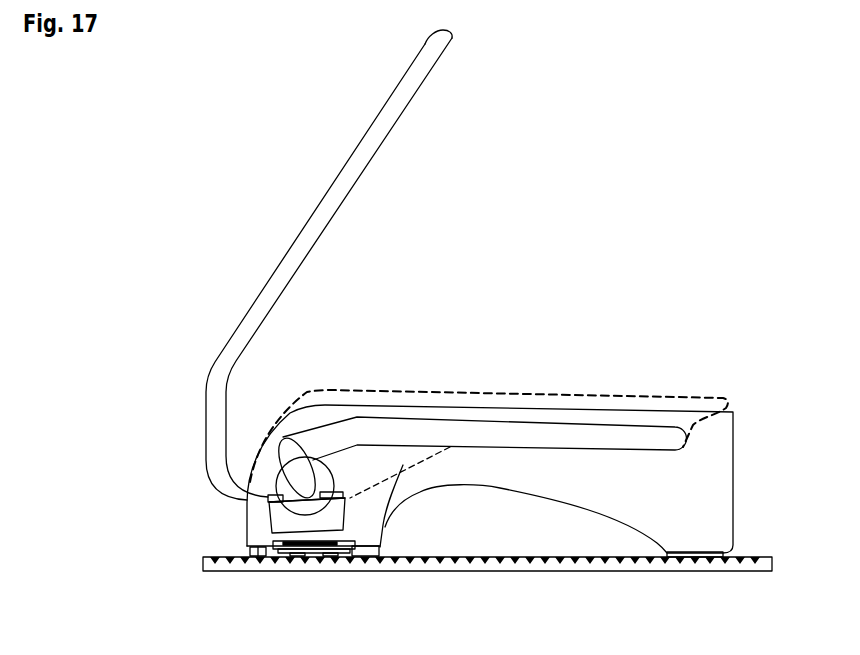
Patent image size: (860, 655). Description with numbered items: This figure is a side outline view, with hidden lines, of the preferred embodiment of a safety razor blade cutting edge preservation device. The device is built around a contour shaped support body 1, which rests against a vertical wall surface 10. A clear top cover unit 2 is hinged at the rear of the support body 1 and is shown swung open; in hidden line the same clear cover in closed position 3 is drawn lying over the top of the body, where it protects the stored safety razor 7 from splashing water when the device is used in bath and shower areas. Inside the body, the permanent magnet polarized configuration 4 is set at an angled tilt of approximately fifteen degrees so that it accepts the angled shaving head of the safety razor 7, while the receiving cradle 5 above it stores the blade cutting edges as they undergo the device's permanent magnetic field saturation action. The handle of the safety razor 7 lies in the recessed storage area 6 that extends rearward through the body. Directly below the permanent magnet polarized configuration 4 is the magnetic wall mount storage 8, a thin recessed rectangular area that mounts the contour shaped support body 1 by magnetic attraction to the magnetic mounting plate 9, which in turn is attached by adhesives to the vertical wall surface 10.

The contour shaped support body 1 is at (707, 472).
The clear top cover unit 2 is at (331, 198).
The clear cover in closed position 3 is at (562, 395).
The permanent magnet polarized configuration 4 is at (270, 520).
The receiving cradle 5 is at (268, 497).
The recessed storage area 6 is at (370, 458).
The safety razor 7 is at (292, 445).
The magnetic wall mount storage 8 is at (258, 556).
The magnetic mounting plate 9 is at (315, 556).
The vertical wall surface 10 is at (732, 571).